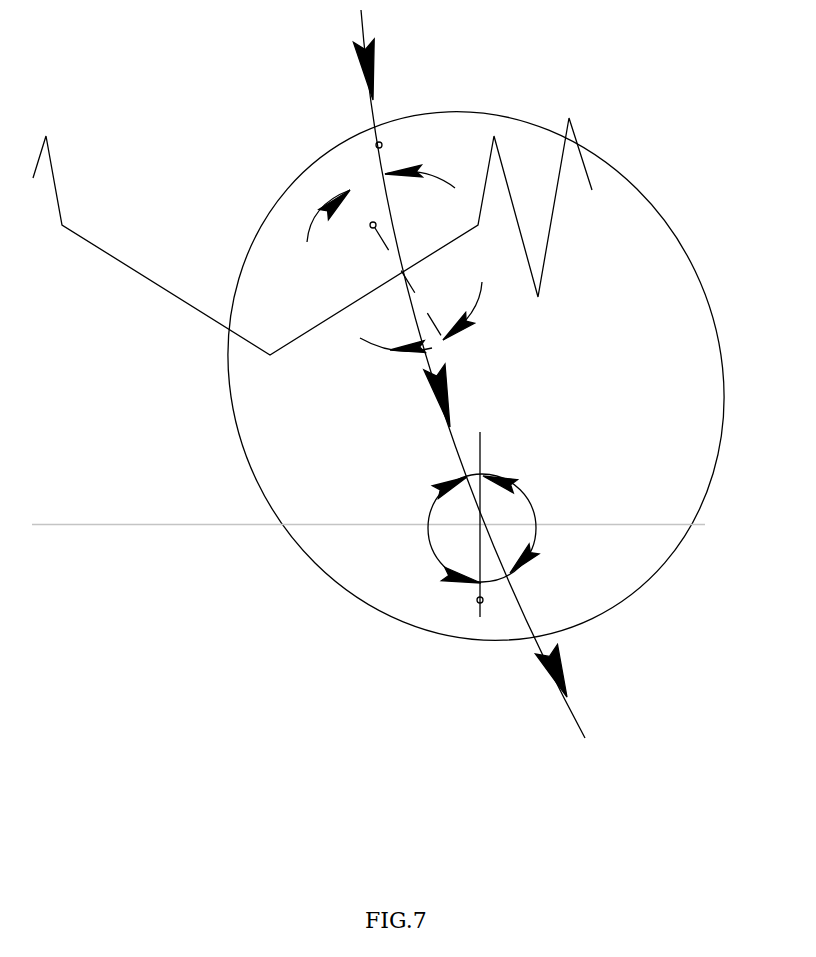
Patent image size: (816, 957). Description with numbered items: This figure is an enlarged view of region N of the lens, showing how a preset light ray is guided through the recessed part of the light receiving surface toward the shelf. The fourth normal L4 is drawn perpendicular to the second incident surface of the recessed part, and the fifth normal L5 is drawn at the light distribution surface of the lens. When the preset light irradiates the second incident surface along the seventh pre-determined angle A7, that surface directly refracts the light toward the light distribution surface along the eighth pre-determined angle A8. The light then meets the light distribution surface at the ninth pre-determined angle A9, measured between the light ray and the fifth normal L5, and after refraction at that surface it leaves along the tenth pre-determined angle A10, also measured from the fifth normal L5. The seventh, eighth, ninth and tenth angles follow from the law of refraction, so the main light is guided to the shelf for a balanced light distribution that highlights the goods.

The region N is at (250, 468).
The fourth normal L4 is at (373, 225).
The fifth normal L5 is at (480, 603).
The seventh pre-determined angle A7 is at (363, 177).
The eighth pre-determined angle A8 is at (438, 343).
The ninth pre-determined angle A9 is at (463, 470).
The tenth pre-determined angle A10 is at (495, 583).